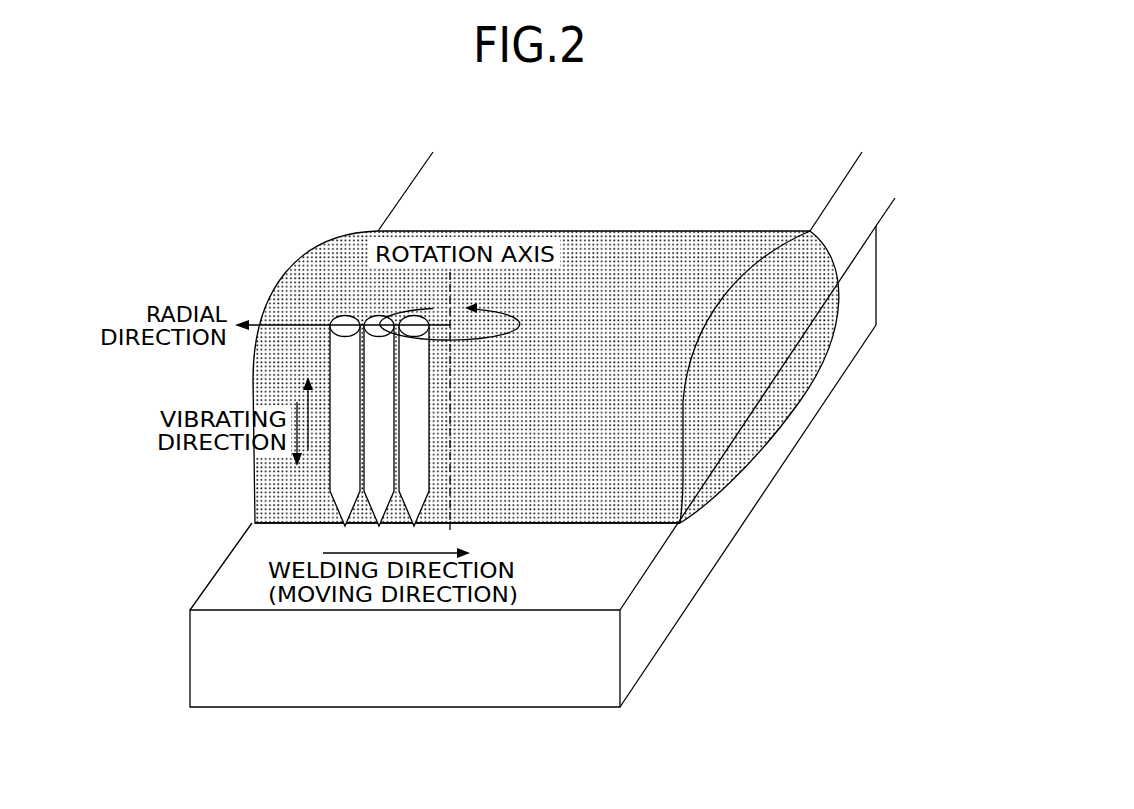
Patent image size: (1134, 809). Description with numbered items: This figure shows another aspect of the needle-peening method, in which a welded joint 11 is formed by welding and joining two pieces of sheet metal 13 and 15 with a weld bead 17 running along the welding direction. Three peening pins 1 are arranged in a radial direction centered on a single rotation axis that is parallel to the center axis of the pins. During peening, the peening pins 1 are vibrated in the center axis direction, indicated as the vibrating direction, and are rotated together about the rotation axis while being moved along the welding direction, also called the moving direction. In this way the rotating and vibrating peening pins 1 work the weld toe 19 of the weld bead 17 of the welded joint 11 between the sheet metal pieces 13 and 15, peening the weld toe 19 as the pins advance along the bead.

The peening pin 1 is at (343, 316).
The welded joint 11 is at (572, 400).
The sheet metal 13 is at (540, 598).
The sheet metal 15 is at (840, 178).
The weld bead 17 is at (622, 230).
The weld toe 19 is at (588, 525).